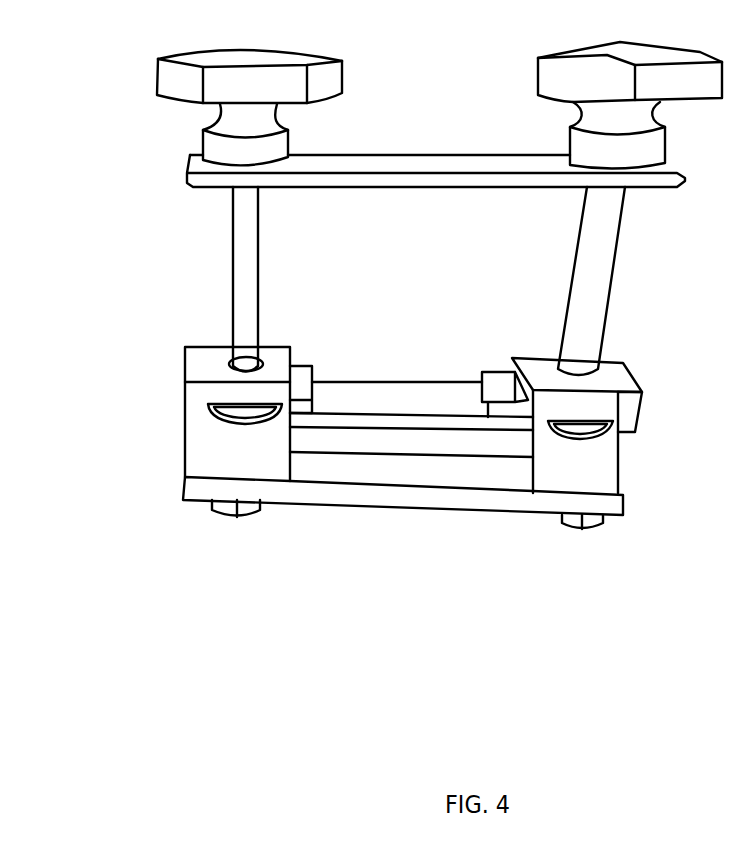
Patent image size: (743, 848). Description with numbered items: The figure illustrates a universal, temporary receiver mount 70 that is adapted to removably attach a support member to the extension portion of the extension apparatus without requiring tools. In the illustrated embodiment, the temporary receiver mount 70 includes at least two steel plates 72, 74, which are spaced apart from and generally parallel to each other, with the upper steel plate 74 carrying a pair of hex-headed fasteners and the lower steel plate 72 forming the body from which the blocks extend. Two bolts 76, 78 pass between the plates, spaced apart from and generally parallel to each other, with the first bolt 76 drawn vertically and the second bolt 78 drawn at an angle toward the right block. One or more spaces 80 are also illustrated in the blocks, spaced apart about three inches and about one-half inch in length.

The temporary receiver mount 70 is at (214, 217).
The steel plate 72 is at (385, 397).
The steel plate 74 is at (283, 177).
The bolt 76 is at (257, 281).
The bolt 78 is at (606, 306).
The space 80 is at (190, 442).